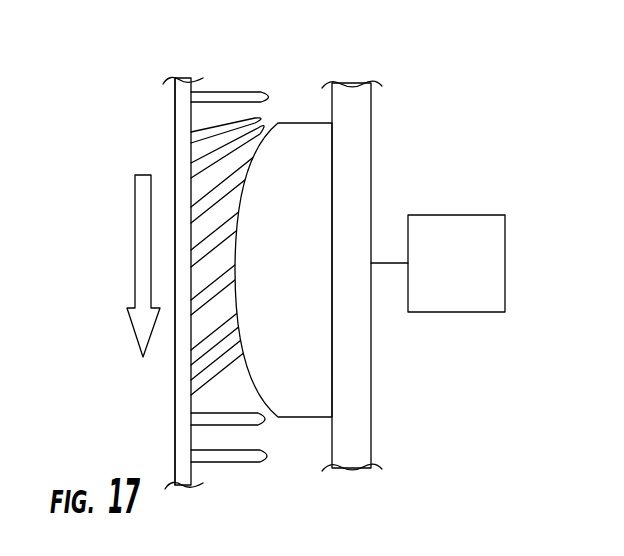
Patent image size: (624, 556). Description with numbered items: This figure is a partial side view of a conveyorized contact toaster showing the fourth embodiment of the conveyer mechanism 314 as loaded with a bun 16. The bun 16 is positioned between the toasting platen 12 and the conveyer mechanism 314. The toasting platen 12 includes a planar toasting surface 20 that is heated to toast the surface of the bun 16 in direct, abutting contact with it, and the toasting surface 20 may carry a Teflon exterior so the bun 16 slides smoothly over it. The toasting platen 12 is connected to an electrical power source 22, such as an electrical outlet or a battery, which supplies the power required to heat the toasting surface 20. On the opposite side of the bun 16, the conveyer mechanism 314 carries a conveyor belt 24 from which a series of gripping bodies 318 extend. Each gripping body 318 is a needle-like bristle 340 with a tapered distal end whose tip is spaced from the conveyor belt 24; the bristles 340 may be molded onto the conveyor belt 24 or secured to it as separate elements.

The toasting platen 12 is at (256, 272).
The bun 16 is at (285, 390).
The toasting surface 20 is at (330, 450).
The electrical power source 22 is at (462, 215).
The conveyor belt 24 is at (165, 440).
The conveyer mechanism 314 is at (177, 47).
The gripping body 318 is at (270, 240).
The bristle 340 is at (222, 93).